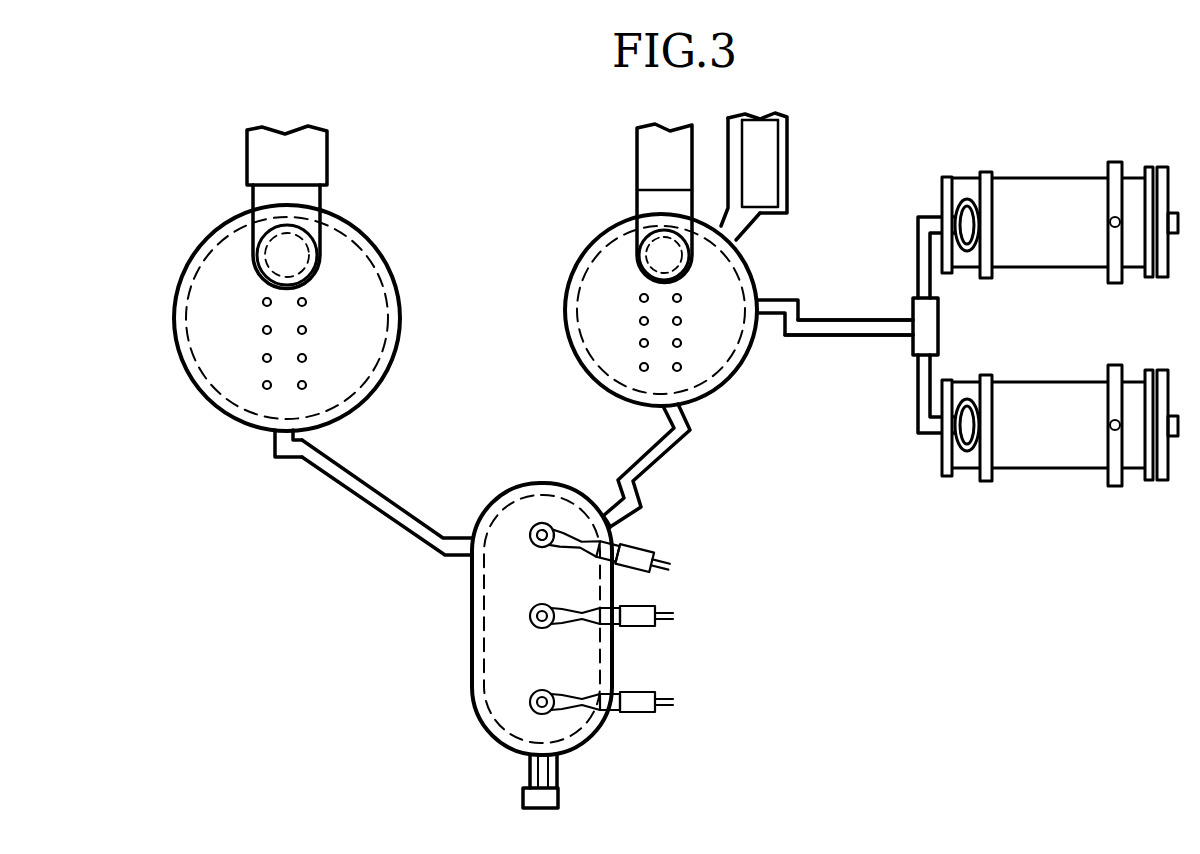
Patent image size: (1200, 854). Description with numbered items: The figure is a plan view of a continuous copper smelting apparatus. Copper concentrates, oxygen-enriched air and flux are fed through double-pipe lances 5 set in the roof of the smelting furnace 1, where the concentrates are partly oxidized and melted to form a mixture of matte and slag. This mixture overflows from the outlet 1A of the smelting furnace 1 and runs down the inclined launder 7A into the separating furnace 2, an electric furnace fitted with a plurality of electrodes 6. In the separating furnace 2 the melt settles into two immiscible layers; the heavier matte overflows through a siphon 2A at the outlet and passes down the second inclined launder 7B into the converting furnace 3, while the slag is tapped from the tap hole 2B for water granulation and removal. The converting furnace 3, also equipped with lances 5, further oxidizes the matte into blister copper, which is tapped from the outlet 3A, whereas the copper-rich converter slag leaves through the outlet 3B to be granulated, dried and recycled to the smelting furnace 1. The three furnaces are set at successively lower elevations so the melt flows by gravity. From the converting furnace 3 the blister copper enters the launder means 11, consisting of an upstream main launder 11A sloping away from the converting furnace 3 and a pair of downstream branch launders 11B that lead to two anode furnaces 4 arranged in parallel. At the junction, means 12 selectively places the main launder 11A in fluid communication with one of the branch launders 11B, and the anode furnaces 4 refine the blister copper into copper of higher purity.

The smelting furnace 1 is at (307, 314).
The outlet of the smelting furnace 1A is at (254, 431).
The lances 5 is at (326, 300).
The converting furnace 3 is at (733, 277).
The outlet of the converting furnace 3A is at (768, 328).
The outlet for slag of the converting furnace 3B is at (746, 244).
The launder 7A is at (373, 483).
The launder 7B is at (632, 478).
The separating furnace 2 is at (550, 608).
The siphon 2A is at (616, 532).
The tap hole 2B is at (566, 762).
The electrodes 6 is at (537, 520).
The launder means 11 is at (909, 247).
The main launder 11A is at (838, 318).
The branch launders 11B is at (916, 377).
The means for selectively bringing the main launder into fluid communication with on 12 is at (940, 325).
The anode furnaces 4 is at (1058, 174).